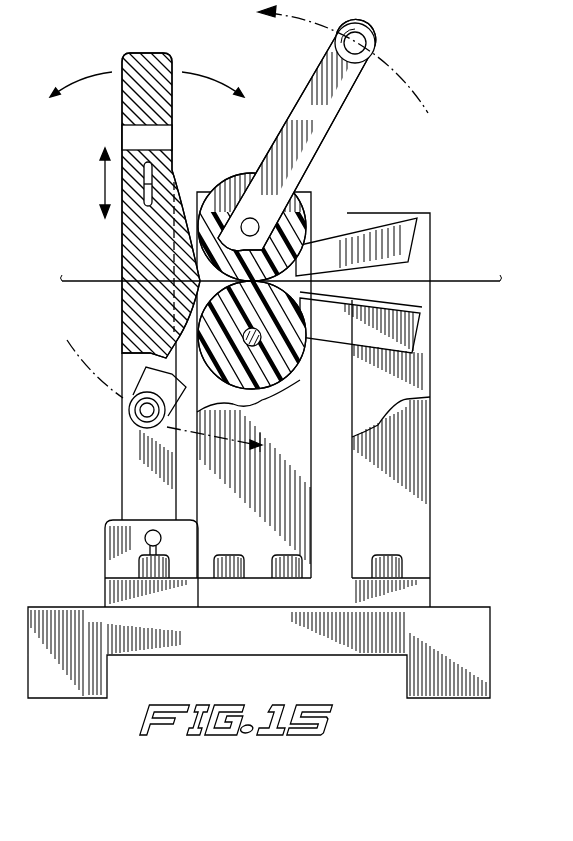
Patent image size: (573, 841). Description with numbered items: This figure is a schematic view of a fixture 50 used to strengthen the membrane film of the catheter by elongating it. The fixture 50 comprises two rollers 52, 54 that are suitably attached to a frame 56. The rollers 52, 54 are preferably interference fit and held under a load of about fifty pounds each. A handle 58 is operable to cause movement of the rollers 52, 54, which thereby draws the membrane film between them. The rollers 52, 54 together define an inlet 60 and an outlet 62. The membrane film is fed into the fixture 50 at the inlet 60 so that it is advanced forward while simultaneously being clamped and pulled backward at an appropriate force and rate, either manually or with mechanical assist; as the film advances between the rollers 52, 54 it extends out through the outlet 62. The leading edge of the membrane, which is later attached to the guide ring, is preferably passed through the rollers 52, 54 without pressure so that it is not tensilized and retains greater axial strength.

The fixture 50 is at (418, 186).
The roller 52 is at (260, 384).
The roller 54 is at (228, 193).
The frame 56 is at (270, 481).
The handle 58 is at (138, 112).
The inlet 60 is at (140, 252).
The outlet 62 is at (322, 236).